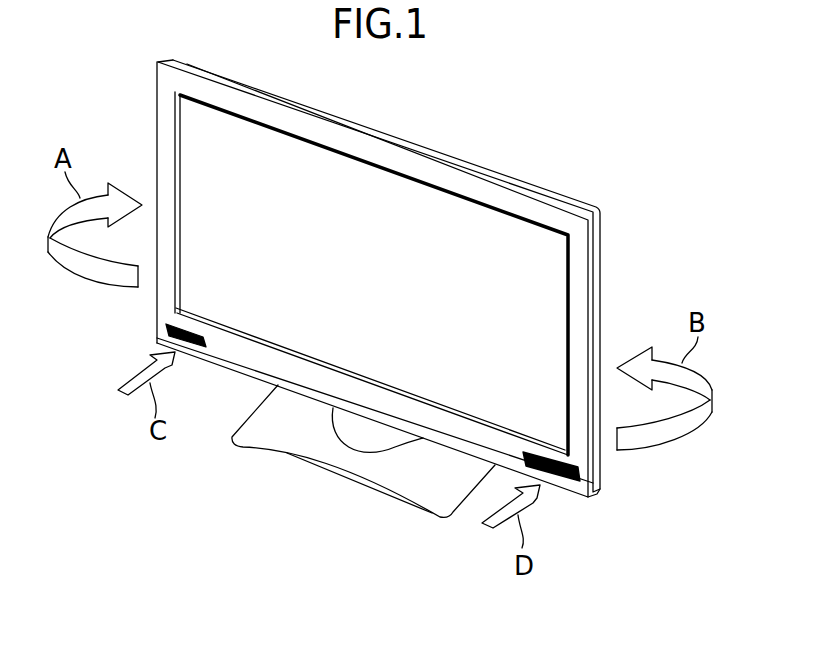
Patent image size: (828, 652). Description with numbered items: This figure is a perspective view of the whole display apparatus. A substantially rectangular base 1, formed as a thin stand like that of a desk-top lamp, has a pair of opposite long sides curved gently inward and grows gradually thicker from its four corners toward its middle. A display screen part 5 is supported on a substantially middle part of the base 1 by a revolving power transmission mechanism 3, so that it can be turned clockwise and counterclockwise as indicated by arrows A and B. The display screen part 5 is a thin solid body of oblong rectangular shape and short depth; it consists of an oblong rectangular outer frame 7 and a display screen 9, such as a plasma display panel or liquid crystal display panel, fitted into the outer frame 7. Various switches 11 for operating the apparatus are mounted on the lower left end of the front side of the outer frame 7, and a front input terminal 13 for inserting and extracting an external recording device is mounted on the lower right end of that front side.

The base 1 is at (290, 453).
The revolving power transmission mechanism 3 is at (390, 451).
The display screen part 5 is at (603, 245).
The outer frame 7 is at (465, 166).
The display screen 9 is at (320, 165).
The switches 11 is at (165, 330).
The front input terminal 13 is at (570, 485).